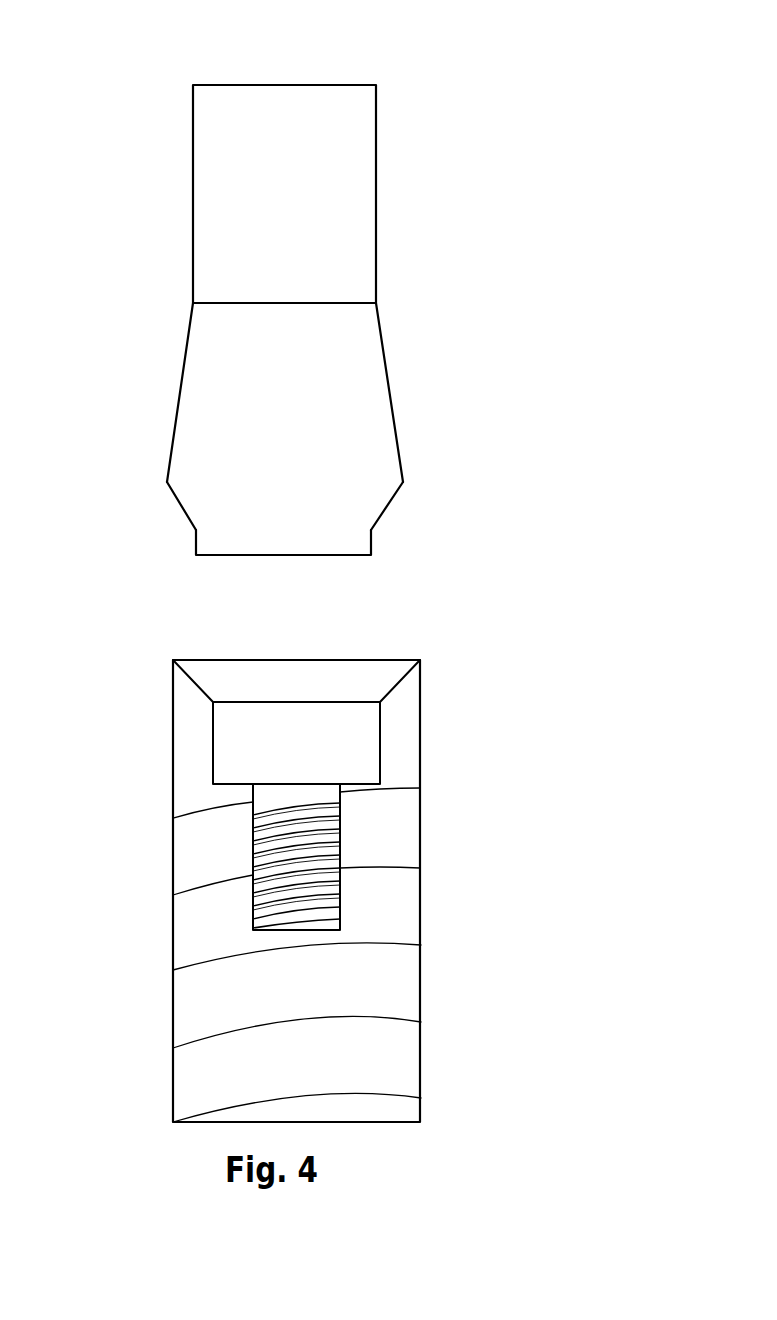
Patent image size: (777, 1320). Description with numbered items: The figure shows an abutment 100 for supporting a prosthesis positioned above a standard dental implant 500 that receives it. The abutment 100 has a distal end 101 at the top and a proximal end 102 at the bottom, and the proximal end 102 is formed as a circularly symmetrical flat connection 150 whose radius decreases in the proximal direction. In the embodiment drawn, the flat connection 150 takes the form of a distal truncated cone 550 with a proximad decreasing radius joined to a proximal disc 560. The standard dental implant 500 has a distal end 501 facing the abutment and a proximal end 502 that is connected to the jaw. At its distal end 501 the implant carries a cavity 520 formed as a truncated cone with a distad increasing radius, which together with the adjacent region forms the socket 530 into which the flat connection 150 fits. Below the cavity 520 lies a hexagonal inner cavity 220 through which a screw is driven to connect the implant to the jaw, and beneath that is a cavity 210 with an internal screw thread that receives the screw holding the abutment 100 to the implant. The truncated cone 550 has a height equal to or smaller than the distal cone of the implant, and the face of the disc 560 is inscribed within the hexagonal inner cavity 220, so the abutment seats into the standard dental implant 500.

The abutment 100 is at (289, 316).
The distal end 101 is at (426, 146).
The proximal end 102 is at (448, 475).
The flat connection 150 is at (278, 537).
The truncated cone 550 is at (383, 512).
The proximal disc 560 is at (371, 540).
The standard dental implant 500 is at (326, 860).
The distal end 501 is at (472, 704).
The proximal end 502 is at (495, 987).
The cavity 520 is at (373, 673).
The socket 530 is at (270, 670).
The hexagonal inner cavity 220 is at (213, 757).
The cavity with internal screw thread 210 is at (303, 848).